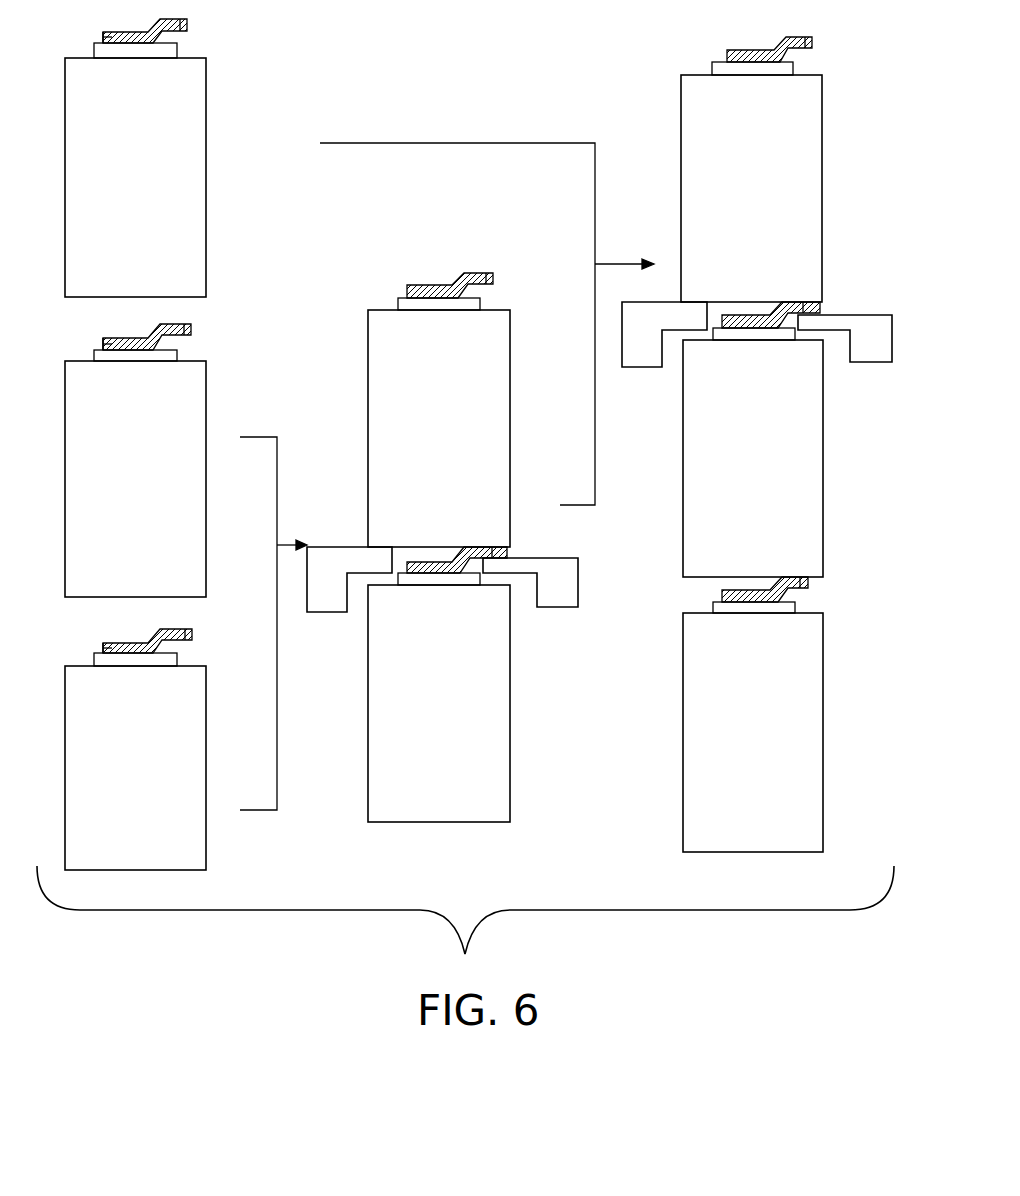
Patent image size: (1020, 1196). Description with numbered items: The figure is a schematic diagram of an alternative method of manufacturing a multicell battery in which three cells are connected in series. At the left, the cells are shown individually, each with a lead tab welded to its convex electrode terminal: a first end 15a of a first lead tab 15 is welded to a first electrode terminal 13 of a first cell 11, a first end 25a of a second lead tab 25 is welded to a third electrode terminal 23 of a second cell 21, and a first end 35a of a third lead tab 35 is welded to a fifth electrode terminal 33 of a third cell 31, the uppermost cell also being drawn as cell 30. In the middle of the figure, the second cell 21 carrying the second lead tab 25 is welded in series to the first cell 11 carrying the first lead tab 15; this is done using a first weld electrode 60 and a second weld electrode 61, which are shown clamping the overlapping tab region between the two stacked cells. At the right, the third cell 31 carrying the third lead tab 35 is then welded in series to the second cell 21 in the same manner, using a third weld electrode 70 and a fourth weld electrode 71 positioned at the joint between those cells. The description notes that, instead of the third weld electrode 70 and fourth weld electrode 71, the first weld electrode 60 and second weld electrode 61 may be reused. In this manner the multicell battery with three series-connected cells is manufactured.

The first cell 11 is at (180, 762).
The first electrode terminal 13 is at (180, 660).
The first lead tab 15 is at (192, 636).
The first end of first lead tab 15a is at (107, 645).
The second cell 21 is at (185, 493).
The third electrode terminal 23 is at (185, 355).
The second lead tab 25 is at (192, 332).
The first end of second lead tab 25a is at (104, 342).
The third battery cell 30 is at (193, 190).
The third cell 31 is at (812, 192).
The fifth electrode terminal 33 is at (185, 52).
The third lead tab 35 is at (190, 28).
The first end of third lead tab 35a is at (108, 36).
The first weld electrode 60 is at (323, 597).
The second weld electrode 61 is at (567, 587).
The third weld electrode 70 is at (640, 357).
The fourth weld electrode 71 is at (880, 352).